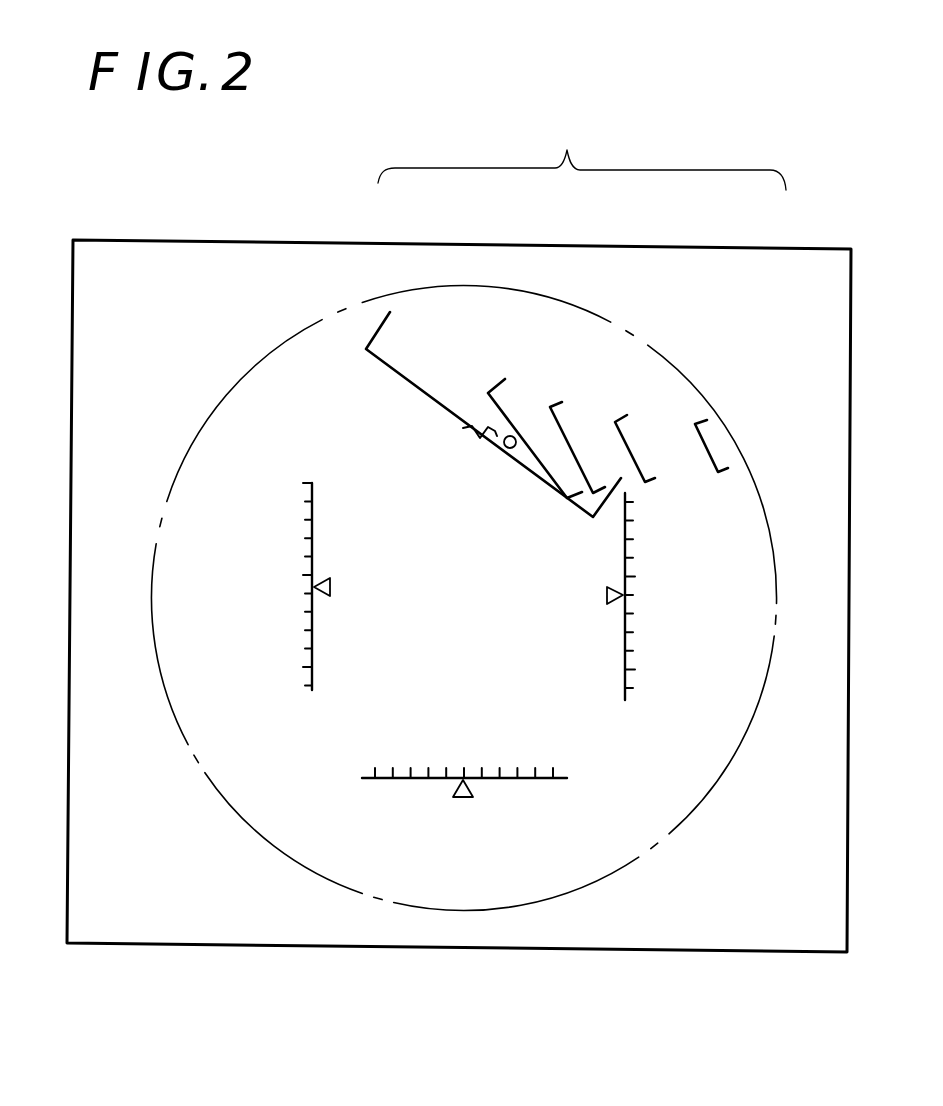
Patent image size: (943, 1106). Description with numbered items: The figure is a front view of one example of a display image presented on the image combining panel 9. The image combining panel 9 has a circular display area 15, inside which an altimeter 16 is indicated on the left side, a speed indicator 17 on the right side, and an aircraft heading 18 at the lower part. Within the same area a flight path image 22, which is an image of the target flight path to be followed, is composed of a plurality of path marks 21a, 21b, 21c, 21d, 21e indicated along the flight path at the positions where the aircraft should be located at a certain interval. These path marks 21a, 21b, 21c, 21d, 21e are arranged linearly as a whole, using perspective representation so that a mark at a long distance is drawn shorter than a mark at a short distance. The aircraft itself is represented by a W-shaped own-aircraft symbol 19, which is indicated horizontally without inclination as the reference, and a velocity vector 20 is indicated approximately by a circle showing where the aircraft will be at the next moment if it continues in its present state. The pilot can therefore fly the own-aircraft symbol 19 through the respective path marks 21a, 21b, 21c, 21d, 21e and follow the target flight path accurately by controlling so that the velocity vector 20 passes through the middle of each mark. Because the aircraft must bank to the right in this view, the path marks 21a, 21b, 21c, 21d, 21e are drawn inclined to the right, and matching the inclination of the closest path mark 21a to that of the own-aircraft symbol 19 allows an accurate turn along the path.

The image combining panel 9 is at (73, 282).
The circular display area 15 is at (186, 464).
The altimeter 16 is at (312, 633).
The speed indicator 17 is at (625, 639).
The aircraft heading 18 is at (523, 779).
The own-aircraft symbol 19 is at (466, 429).
The velocity vector 20 is at (507, 452).
The path mark 21a is at (392, 314).
The path mark 21b is at (503, 386).
The path mark 21c is at (563, 420).
The path mark 21d is at (625, 433).
The path mark 21e is at (712, 428).
The flight path image 22 is at (582, 151).